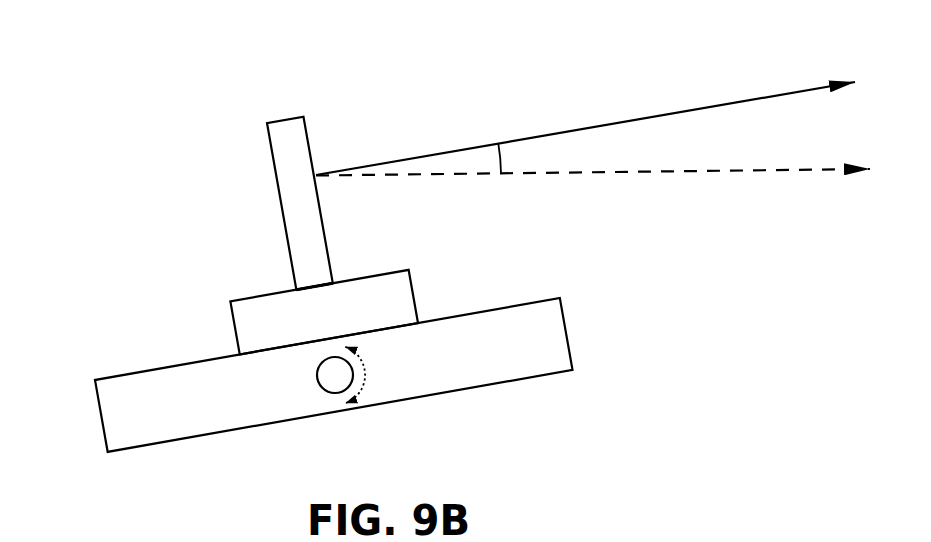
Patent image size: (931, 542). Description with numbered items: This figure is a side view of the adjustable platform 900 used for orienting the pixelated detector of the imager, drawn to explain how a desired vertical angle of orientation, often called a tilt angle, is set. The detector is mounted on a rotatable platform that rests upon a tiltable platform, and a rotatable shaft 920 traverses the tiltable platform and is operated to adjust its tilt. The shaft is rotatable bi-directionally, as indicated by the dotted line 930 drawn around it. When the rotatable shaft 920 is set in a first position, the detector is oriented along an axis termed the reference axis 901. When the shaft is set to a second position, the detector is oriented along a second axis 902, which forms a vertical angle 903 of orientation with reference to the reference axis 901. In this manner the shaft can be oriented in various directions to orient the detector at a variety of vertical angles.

The adjustable platform 900 is at (74, 89).
The reference axis 901 is at (567, 122).
The second axis 902 is at (677, 160).
The vertical angle 903 is at (508, 157).
The rotatable shaft 920 is at (318, 385).
The dotted line 930 is at (378, 368).